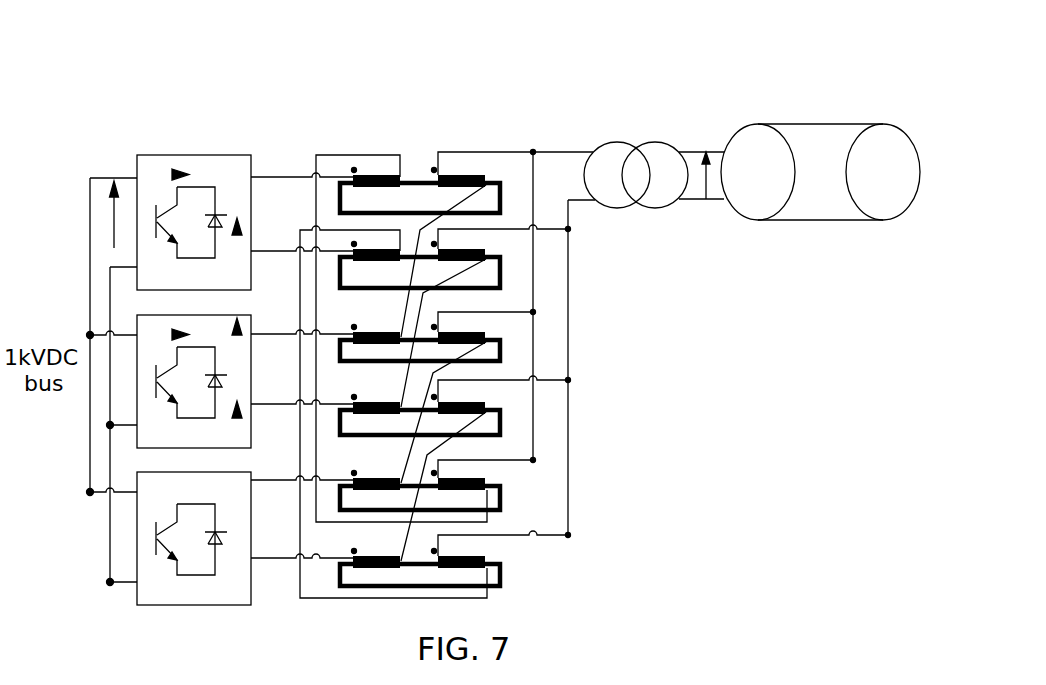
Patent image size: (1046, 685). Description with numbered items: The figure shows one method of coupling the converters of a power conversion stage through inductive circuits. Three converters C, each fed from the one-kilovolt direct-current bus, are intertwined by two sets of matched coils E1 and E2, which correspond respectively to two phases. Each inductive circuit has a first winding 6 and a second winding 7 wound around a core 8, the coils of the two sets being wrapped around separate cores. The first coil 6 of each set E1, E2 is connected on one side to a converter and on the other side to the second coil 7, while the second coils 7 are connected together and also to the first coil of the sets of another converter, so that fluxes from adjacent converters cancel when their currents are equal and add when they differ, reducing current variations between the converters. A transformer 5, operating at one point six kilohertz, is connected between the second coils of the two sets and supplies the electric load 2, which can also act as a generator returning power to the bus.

The electric load 2 is at (864, 80).
The transformer 5 is at (693, 135).
The first winding 6 is at (366, 175).
The second winding 7 is at (472, 175).
The core 8 is at (498, 180).
The converter C is at (195, 154).
The first set of matched coils E1 is at (308, 187).
The second set of matched coils E2 is at (512, 275).